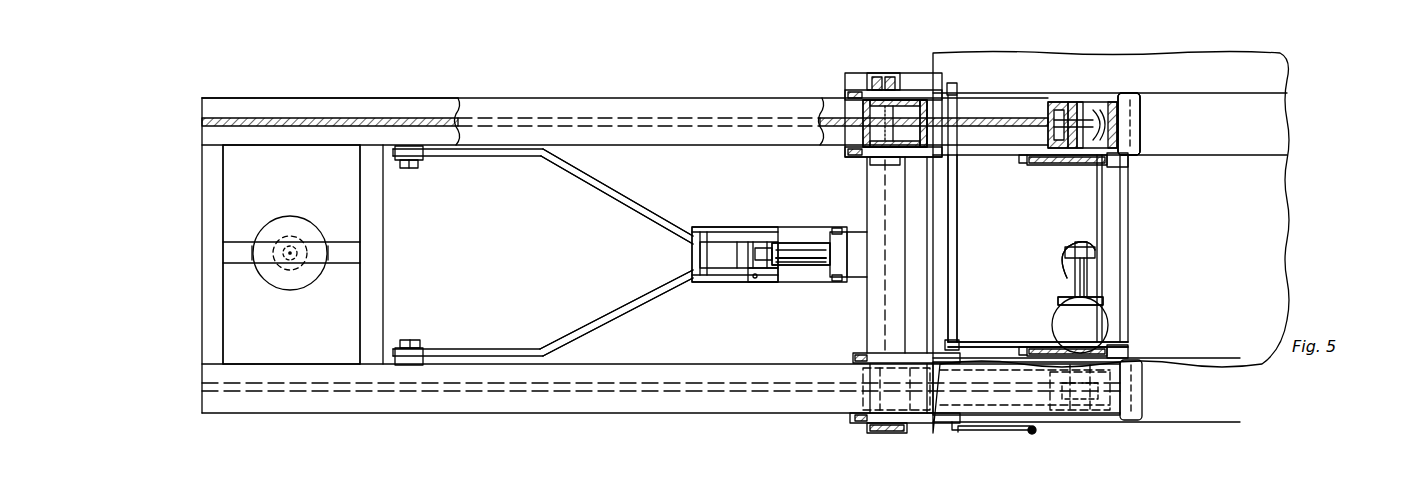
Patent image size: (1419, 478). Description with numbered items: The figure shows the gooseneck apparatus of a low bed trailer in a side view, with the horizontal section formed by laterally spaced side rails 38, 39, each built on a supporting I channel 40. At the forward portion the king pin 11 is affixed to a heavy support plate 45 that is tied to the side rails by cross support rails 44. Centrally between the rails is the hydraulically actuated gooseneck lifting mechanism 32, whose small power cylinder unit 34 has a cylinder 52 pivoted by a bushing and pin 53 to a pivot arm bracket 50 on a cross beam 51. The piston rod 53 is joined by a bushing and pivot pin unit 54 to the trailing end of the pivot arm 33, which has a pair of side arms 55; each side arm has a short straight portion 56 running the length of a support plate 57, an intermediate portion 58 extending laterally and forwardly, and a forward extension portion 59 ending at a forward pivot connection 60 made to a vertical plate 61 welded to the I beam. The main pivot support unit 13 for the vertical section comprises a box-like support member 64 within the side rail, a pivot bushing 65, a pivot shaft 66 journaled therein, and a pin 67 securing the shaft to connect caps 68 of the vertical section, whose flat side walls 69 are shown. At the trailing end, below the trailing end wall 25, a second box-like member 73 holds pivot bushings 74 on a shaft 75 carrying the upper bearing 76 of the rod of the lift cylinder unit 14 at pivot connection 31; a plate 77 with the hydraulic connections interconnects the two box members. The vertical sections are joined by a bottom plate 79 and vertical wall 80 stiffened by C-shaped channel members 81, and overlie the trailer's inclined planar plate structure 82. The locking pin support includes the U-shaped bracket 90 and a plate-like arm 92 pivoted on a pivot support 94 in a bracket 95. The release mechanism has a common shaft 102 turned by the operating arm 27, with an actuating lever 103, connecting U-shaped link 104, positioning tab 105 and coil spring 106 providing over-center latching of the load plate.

The king pin 11 is at (296, 245).
The main pivot support unit 13 is at (872, 58).
The hydraulic power cylinder unit 14 is at (1128, 133).
The trailing end wall 25 is at (1135, 112).
The operating arm 27 is at (1010, 414).
The pivot connection 31 is at (1065, 103).
The gooseneck lifting mechanism 32 is at (790, 204).
The pivot arm 33 is at (612, 181).
The hydraulic power cylinder unit 34 is at (810, 266).
The side rail 38 is at (200, 121).
The side rail 39 is at (200, 392).
The I channel 40 is at (385, 118).
The cross support rail 44 is at (365, 174).
The support plate 45 is at (297, 336).
The pivot arm bracket 50 is at (858, 216).
The cross beam 51 is at (884, 189).
The cylinder 52 is at (800, 242).
The piston rod 53 is at (762, 246).
The bushing and pivot pin unit 54 is at (754, 278).
The side arm 55 is at (670, 230).
The short straight portion 56 is at (722, 236).
The support plate 57 is at (700, 226).
The intermediate portion 58 is at (595, 176).
The forward extension portion 59 is at (494, 154).
The forward pivot connection 60 is at (406, 168).
The vertical plate 61 is at (415, 150).
The box-like support member 64 is at (860, 110).
The pivot bushing 65 is at (862, 142).
The pivot shaft 66 is at (916, 102).
The pin 67 is at (885, 76).
The connect cap 68 is at (854, 92).
The side wall 69 is at (850, 362).
The box-like support member 73 is at (1114, 100).
The pivot bushing 74 is at (1096, 107).
The pivot pin or shaft 75 is at (1080, 102).
The upper bearing 76 is at (1060, 121).
The plate 77 is at (1004, 378).
The bottom plate 79 is at (1030, 274).
The vertical wall 80 is at (954, 225).
The C-shaped channel member 81 is at (937, 187).
The inclined planar plate structure 82 is at (1140, 122).
The U-shaped bracket 90 is at (1092, 240).
The plate-like arm 92 is at (1088, 266).
The pivot support 94 is at (1102, 301).
The bracket 95 is at (1086, 288).
The common shaft 102 is at (957, 252).
The actuating lever 103 is at (962, 336).
The connecting U-shaped link 104 is at (996, 342).
The positioning tab 105 is at (1128, 164).
The coil spring 106 is at (1072, 166).